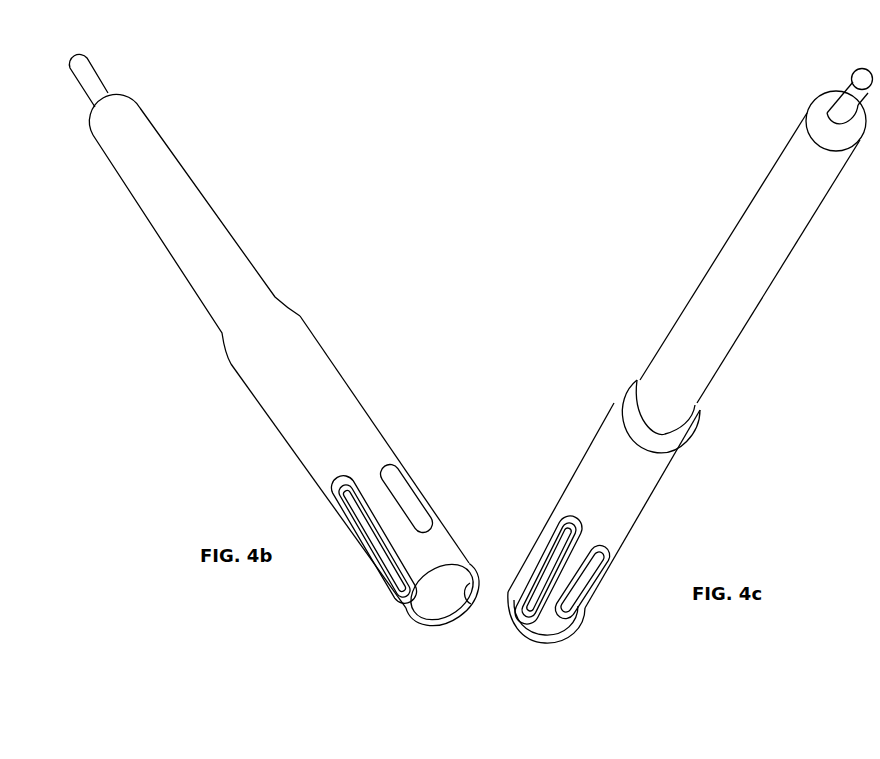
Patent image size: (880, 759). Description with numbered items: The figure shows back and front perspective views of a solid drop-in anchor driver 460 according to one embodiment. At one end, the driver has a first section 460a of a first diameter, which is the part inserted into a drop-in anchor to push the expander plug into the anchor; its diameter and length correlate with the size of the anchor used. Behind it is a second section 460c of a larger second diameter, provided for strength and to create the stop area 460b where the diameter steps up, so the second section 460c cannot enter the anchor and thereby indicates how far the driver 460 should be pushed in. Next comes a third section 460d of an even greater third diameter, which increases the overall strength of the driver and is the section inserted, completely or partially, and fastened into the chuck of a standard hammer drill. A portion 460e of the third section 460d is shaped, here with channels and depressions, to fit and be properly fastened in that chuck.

In FIG. 4B, the solid drop-in anchor driver 460 is at (397, 222).
In FIG. 4C, the solid drop-in anchor driver 460 is at (487, 170).
In FIG. 4B, the first section 460a is at (95, 66).
In FIG. 4B, the stop area 460b is at (118, 96).
In FIG. 4B, the second section 460c is at (203, 192).
In FIG. 4B, the third section 460d is at (372, 414).
In FIG. 4C, the third section 460d is at (480, 392).
In FIG. 4B, the portion of the third section 460e is at (495, 553).